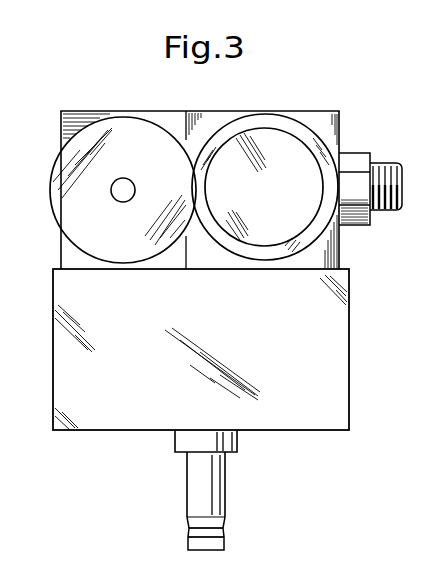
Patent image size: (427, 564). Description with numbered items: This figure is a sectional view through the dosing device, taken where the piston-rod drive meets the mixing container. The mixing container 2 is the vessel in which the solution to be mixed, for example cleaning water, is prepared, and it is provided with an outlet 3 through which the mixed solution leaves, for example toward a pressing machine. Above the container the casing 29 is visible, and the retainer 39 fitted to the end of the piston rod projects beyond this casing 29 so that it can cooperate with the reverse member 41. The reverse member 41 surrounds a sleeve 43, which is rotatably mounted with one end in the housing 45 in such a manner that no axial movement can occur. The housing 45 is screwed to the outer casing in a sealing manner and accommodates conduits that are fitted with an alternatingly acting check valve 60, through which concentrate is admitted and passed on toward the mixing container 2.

The mixing container 2 is at (327, 413).
The outlet 3 is at (212, 497).
The casing 29 is at (72, 120).
The retainer 39 is at (130, 247).
The reverse member 41 is at (238, 259).
The sleeve 43 is at (278, 237).
The housing 45 is at (310, 115).
The check valve 60 is at (374, 162).